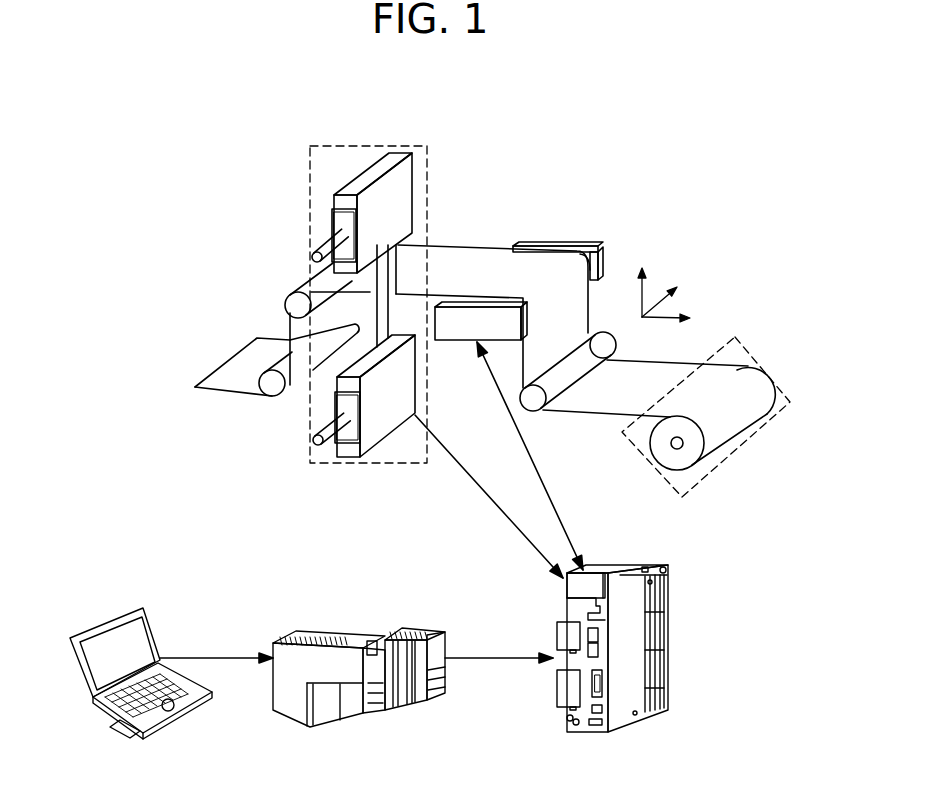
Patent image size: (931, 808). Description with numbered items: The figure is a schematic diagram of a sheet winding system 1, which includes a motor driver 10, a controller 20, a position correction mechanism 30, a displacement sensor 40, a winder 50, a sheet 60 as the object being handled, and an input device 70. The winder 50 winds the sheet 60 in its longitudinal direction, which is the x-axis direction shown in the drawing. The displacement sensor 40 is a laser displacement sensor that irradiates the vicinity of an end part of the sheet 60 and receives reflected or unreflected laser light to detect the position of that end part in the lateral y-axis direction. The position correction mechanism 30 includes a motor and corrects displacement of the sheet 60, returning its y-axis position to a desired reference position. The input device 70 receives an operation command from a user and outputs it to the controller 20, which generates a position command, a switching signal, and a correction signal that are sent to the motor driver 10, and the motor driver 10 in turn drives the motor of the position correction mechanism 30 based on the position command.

The sheet winding system 1 is at (592, 148).
The motor driver 10 is at (651, 572).
The controller 20 is at (393, 622).
The position correction mechanism 30 is at (578, 245).
The displacement sensor 40 is at (395, 146).
The winder 50 is at (767, 370).
The sheet 60 is at (434, 245).
The input device 70 is at (141, 608).